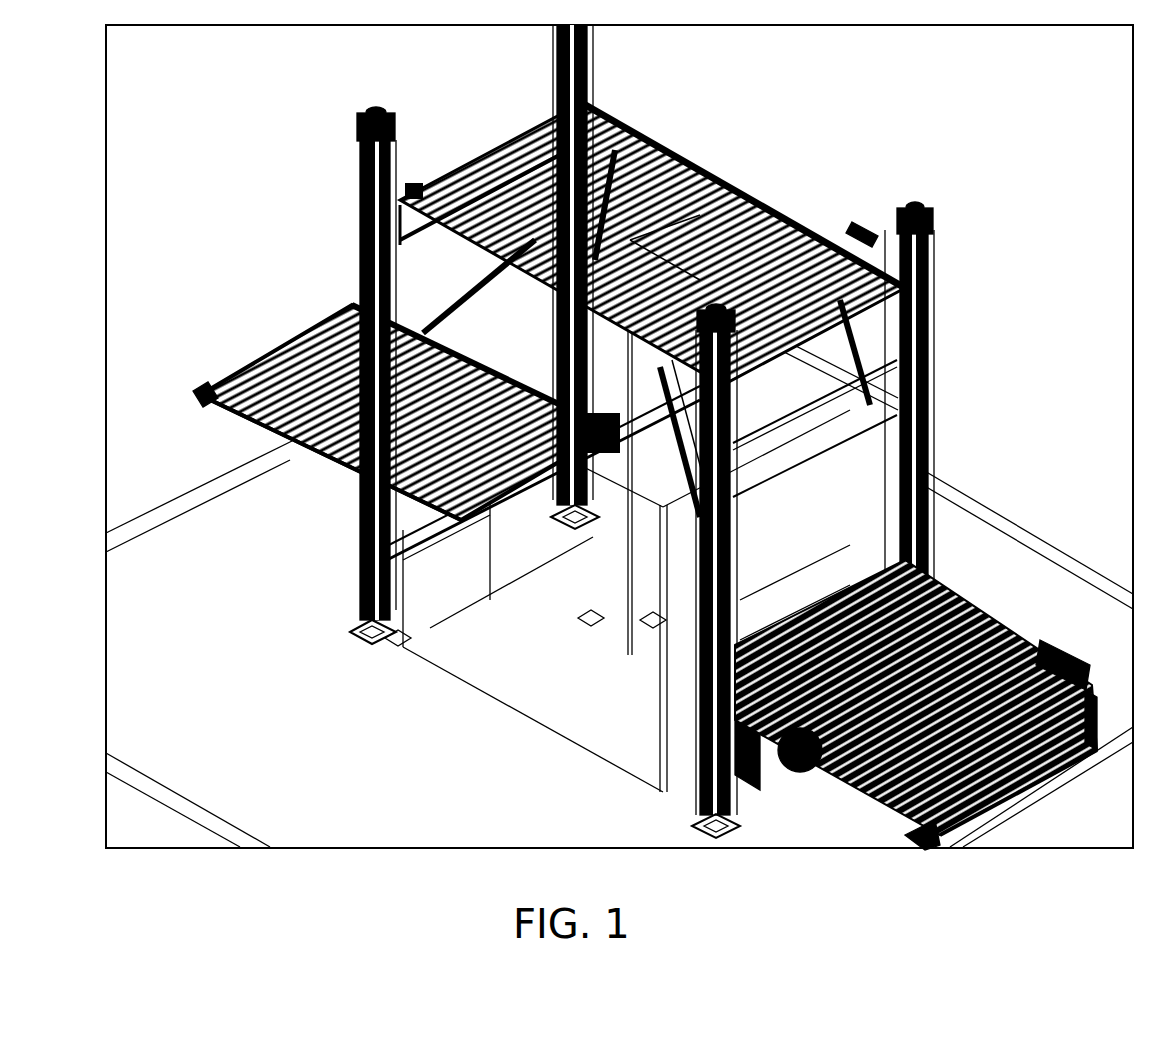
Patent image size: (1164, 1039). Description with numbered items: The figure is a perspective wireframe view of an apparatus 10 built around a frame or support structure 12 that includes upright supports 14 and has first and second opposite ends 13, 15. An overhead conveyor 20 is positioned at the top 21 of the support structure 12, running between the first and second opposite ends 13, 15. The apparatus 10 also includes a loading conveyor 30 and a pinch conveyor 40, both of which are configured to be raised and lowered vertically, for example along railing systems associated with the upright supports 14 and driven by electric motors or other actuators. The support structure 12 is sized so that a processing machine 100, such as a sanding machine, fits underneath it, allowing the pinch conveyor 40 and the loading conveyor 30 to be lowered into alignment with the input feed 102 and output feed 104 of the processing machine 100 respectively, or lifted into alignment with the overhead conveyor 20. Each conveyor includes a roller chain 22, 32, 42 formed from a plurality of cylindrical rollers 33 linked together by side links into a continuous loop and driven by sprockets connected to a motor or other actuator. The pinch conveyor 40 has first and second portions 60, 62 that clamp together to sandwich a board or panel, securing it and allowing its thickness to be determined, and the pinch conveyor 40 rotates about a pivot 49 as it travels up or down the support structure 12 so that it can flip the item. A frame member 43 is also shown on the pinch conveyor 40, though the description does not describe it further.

The apparatus 10 is at (994, 192).
The support structure 12 is at (923, 397).
The first end 13 is at (763, 775).
The upright supports 14 is at (582, 73).
The second end 15 is at (430, 568).
The overhead conveyor 20 is at (652, 244).
The top 21 is at (793, 227).
The roller chain 22 is at (680, 163).
The loading conveyor 30 is at (386, 396).
The roller chain 32 is at (200, 390).
The cylindrical rollers 33 is at (281, 357).
The pinch conveyor 40 is at (932, 705).
The roller chain 42 is at (860, 790).
The roller frame 43 is at (1020, 773).
The pivot 49 is at (805, 768).
The first portion 60 is at (1075, 665).
The second portion 62 is at (1100, 740).
The processing machine 100 is at (505, 696).
The input feed 102 is at (768, 630).
The output feed 104 is at (513, 503).